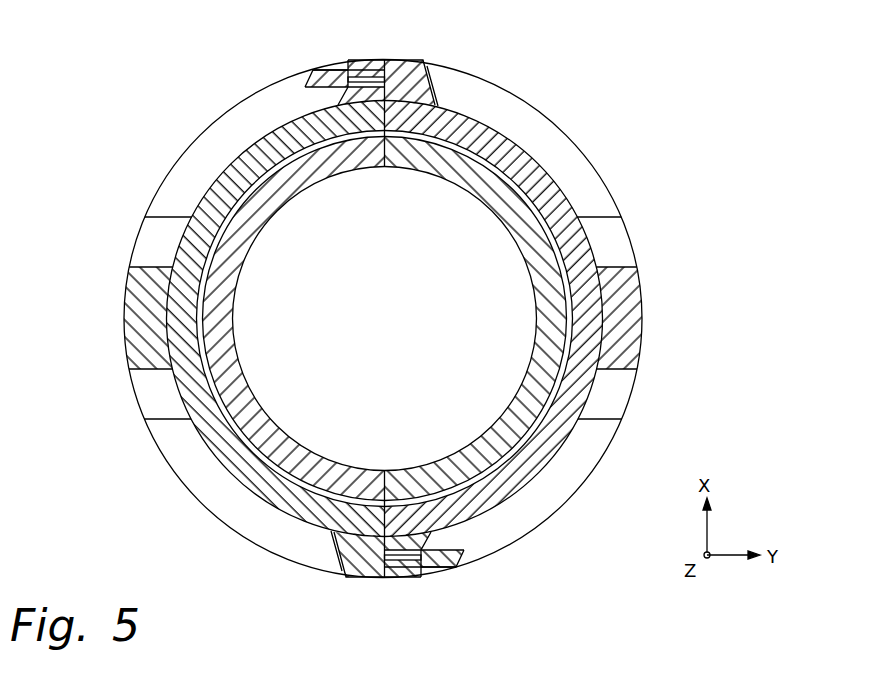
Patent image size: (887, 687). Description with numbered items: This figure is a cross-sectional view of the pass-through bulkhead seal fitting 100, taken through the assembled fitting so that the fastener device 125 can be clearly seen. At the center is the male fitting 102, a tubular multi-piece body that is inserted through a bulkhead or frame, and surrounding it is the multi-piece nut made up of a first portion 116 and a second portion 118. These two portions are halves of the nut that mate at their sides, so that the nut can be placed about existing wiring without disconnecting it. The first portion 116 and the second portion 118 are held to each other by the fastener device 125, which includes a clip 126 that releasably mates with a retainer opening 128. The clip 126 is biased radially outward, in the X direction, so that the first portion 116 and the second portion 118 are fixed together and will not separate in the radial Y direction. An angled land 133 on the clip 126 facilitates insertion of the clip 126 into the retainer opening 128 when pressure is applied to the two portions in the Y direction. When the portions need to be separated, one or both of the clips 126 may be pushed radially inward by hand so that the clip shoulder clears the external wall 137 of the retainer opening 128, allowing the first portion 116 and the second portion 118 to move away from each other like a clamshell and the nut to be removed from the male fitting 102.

The pass-through bulkhead seal fitting 100 is at (641, 61).
The male fitting 102 is at (270, 226).
The first portion 116 is at (124, 317).
The second portion 118 is at (642, 320).
The fastener device 125 is at (446, 47).
The clip 126 is at (336, 72).
The retainer opening 128 is at (375, 66).
The angled land 133 is at (314, 72).
The external wall 137 is at (366, 97).